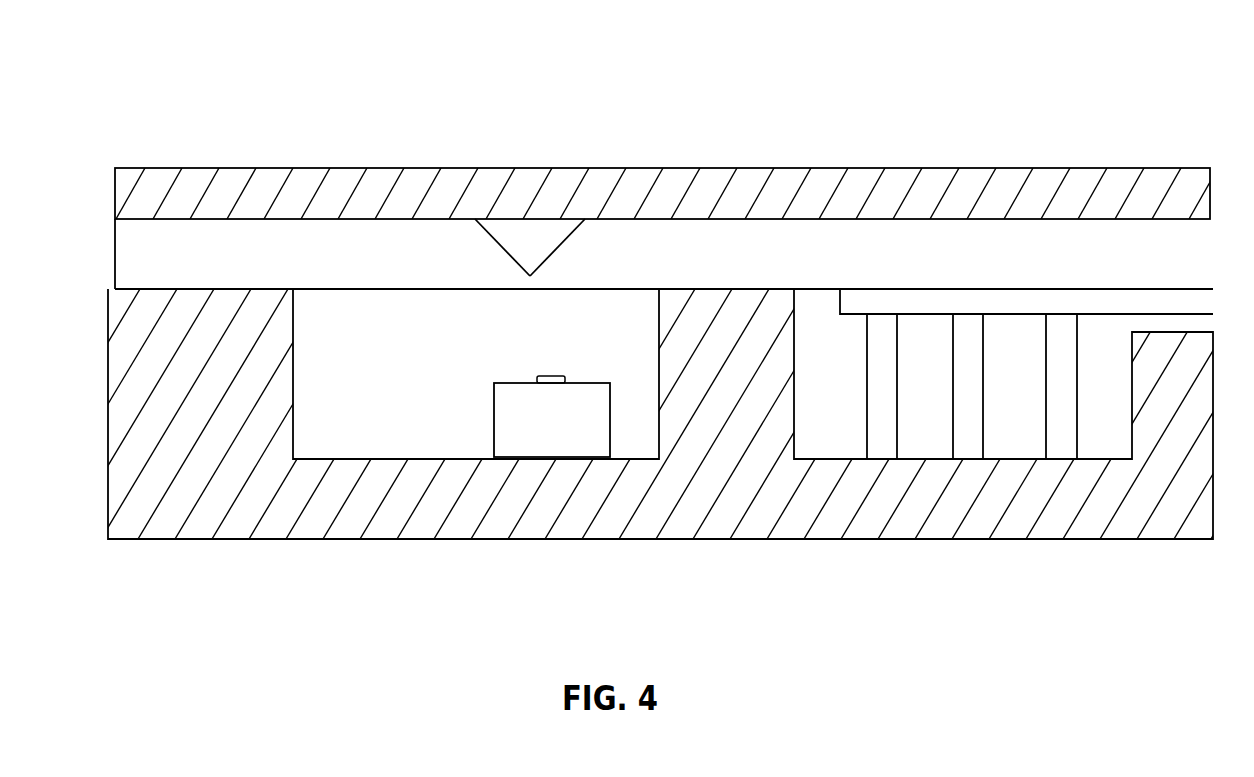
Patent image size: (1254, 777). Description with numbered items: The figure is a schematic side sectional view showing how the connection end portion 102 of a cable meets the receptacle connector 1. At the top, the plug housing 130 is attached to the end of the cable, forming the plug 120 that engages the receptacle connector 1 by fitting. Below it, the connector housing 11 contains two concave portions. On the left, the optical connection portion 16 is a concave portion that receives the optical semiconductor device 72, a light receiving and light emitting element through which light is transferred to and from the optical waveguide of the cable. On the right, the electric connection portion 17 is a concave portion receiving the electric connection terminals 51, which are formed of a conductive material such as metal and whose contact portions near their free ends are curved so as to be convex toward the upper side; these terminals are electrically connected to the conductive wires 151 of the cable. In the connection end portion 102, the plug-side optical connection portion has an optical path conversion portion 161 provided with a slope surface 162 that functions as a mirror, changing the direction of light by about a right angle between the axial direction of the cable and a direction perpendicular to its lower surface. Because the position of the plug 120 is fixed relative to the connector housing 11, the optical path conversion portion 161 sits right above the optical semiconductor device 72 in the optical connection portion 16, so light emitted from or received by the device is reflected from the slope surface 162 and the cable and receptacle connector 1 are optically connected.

The receptacle connector 1 is at (596, 584).
The connector housing 11 is at (245, 540).
The optical connection portion 16 is at (362, 447).
The electric connection portion 17 is at (833, 448).
The electric connection terminals 51 is at (1078, 443).
The optical semiconductor device 72 is at (494, 414).
The connection end portion 102 is at (790, 245).
The plug 120 is at (1030, 72).
The plug housing 130 is at (230, 168).
The conductive wires 151 is at (1025, 302).
The optical path conversion portion 161 is at (523, 240).
The slope surface 162 is at (552, 250).